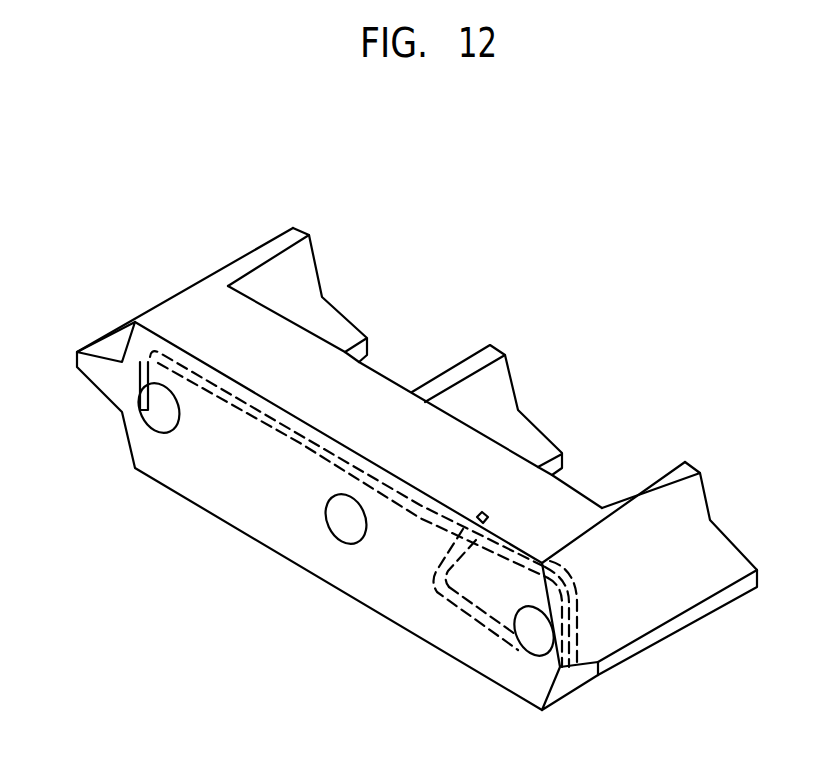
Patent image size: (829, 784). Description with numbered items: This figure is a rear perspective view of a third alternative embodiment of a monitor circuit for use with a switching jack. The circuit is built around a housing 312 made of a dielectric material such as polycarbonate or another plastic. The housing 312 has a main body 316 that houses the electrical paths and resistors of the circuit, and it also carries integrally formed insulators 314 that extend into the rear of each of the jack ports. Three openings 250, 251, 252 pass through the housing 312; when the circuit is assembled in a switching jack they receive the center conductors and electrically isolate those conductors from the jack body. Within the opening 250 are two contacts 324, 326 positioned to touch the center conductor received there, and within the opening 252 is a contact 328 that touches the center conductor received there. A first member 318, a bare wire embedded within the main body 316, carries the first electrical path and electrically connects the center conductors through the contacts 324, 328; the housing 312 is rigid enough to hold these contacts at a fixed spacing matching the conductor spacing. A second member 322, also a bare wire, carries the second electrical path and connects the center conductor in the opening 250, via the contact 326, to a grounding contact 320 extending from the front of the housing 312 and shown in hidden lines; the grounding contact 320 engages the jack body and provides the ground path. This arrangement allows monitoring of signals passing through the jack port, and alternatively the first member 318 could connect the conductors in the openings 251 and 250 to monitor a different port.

The housing 312 is at (193, 485).
The insulators 314 is at (295, 272).
The main body 316 is at (344, 402).
The first member 318 is at (167, 357).
The grounding contact 320 is at (480, 520).
The second member 322 is at (435, 595).
The contact 324 is at (575, 660).
The contact 326 is at (512, 635).
The contact 328 is at (140, 393).
The opening 250 is at (533, 641).
The opening 251 is at (340, 533).
The opening 252 is at (160, 426).